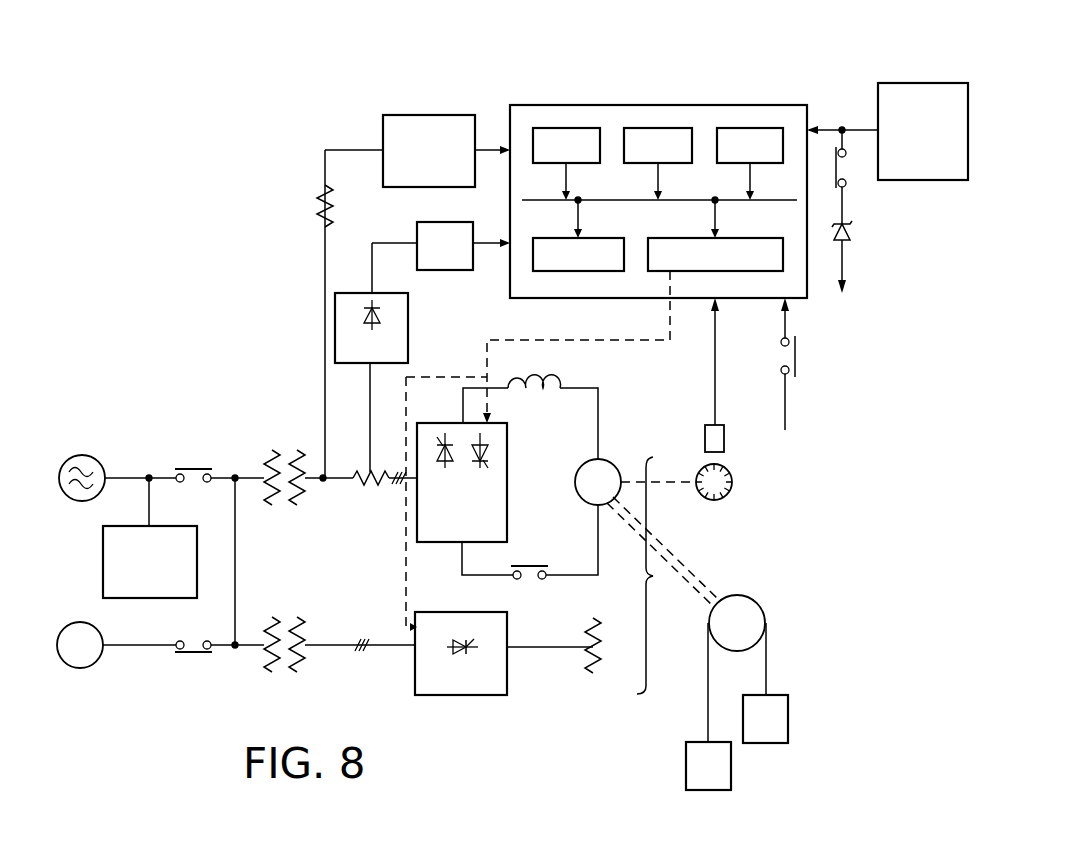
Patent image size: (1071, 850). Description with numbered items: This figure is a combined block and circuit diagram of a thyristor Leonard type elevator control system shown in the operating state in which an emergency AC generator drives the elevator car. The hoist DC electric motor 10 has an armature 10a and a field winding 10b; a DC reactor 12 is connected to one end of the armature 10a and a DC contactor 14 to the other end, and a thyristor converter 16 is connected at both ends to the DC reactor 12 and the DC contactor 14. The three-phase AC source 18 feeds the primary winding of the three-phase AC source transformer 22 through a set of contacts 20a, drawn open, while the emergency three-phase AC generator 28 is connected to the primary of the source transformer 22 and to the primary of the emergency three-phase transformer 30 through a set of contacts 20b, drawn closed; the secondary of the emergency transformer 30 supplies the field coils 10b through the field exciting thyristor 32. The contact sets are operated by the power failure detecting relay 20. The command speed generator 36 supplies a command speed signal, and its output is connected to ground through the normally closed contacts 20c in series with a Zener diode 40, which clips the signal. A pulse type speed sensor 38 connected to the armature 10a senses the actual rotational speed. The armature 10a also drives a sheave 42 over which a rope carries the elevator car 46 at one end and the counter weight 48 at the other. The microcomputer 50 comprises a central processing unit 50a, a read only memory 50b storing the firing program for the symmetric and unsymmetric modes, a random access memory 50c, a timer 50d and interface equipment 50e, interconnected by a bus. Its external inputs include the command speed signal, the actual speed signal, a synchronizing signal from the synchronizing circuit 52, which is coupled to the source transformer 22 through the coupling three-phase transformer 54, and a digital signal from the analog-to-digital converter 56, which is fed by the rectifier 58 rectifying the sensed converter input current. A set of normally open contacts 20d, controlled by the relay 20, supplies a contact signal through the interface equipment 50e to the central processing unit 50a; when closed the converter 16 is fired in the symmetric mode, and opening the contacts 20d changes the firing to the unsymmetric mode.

The hoist DC electric motor 10 is at (658, 575).
The armature 10a is at (607, 461).
The field winding 10b is at (591, 676).
The DC reactor 12 is at (530, 396).
The DC contactor 14 is at (536, 562).
The thyristor converter 16 is at (440, 543).
The three-phase AC source 18 is at (92, 455).
The power failure detecting relay 20 is at (131, 598).
The set of contacts 20a is at (194, 467).
The set of contacts 20b is at (190, 655).
The set of contacts 20c is at (848, 168).
The set of normally open contacts 20d is at (796, 366).
The three-phase AC source transformer 22 is at (285, 453).
The emergency three-phase AC generator 28 is at (83, 668).
The emergency three-phase transformer 30 is at (285, 613).
The field exciting thyristor 32 is at (455, 695).
The command speed generator 36 is at (952, 180).
The speed sensor 38 is at (734, 489).
The Zener diode 40 is at (850, 235).
The sheave 42 is at (765, 624).
The elevator car 46 is at (686, 772).
The counter weight 48 is at (788, 735).
The microcomputer 50 is at (791, 100).
The central processing unit 50a is at (566, 128).
The read only memory 50b is at (659, 128).
The random access memory 50c is at (748, 128).
The timer 50d is at (588, 271).
The interface equipment 50e is at (738, 238).
The synchronizing circuit 52 is at (430, 115).
The coupling three-phase transformer 54 is at (318, 203).
The analog-to-digital converter 56 is at (458, 270).
The rectifier 58 is at (410, 341).